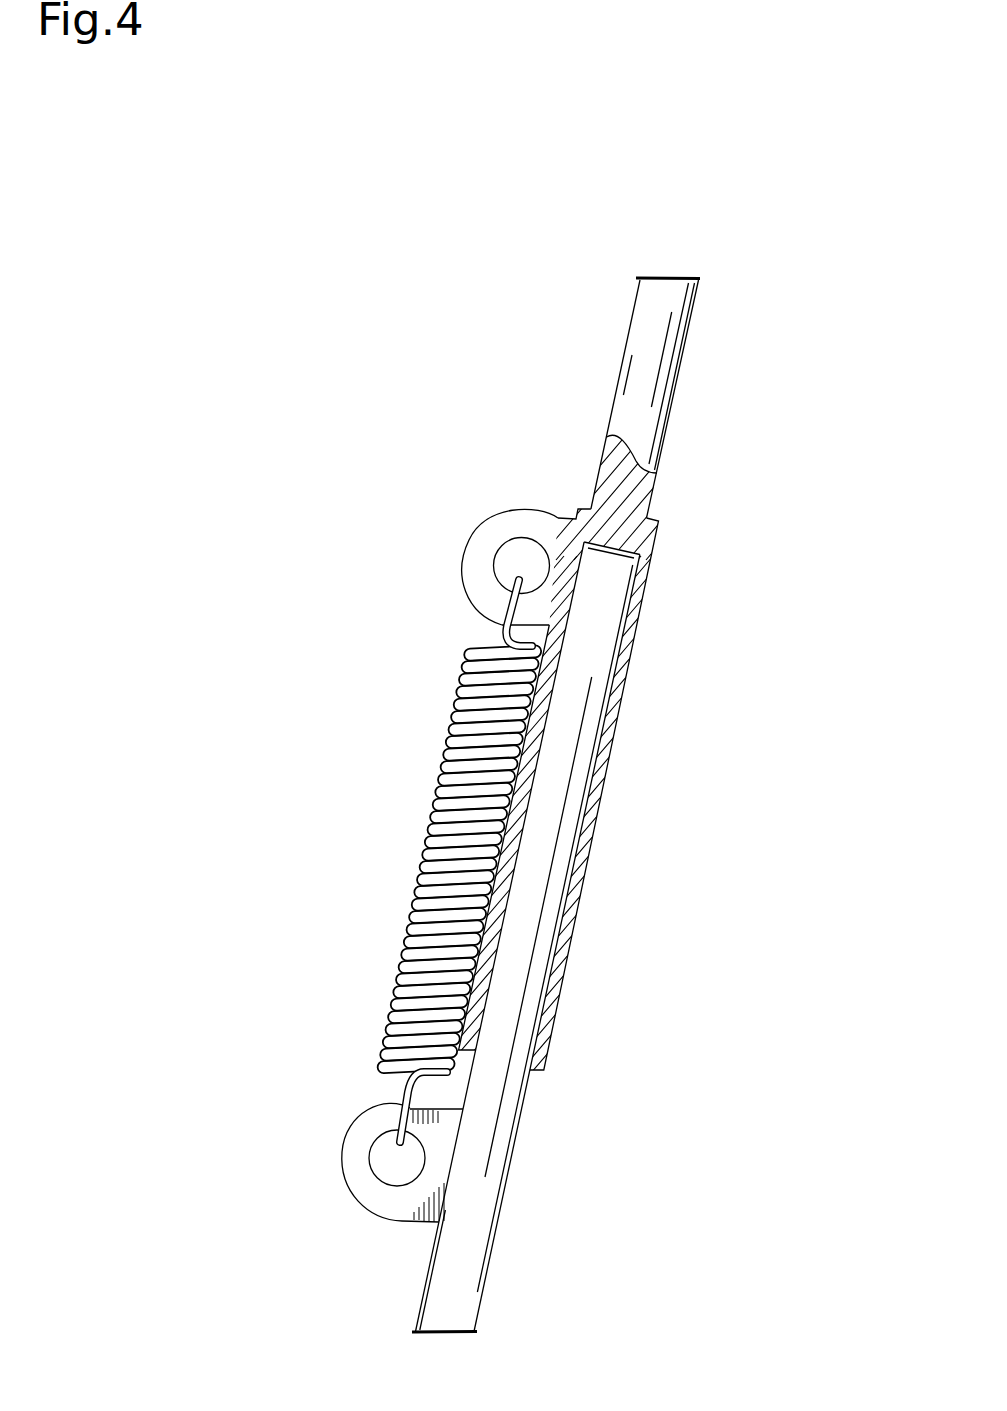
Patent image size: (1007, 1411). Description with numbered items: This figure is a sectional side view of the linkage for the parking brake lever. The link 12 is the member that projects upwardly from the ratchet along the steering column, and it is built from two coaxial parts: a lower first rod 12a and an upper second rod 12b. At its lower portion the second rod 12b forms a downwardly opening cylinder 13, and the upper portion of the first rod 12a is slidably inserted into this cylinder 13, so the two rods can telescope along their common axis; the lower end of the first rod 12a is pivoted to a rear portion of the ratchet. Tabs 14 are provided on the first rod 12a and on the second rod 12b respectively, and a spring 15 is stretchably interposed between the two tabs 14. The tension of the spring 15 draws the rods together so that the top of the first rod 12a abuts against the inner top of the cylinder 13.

The link 12 is at (680, 919).
The first rod 12a is at (484, 1170).
The second rod 12b is at (675, 310).
The cylinder 13 is at (592, 823).
The tabs 14 is at (492, 553).
The spring 15 is at (432, 822).